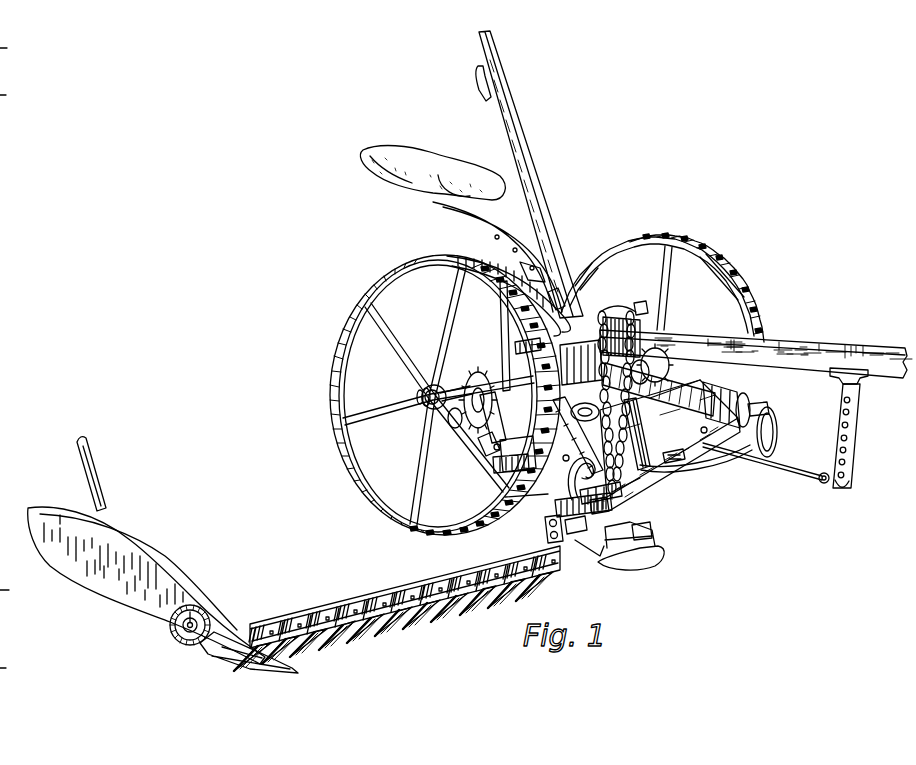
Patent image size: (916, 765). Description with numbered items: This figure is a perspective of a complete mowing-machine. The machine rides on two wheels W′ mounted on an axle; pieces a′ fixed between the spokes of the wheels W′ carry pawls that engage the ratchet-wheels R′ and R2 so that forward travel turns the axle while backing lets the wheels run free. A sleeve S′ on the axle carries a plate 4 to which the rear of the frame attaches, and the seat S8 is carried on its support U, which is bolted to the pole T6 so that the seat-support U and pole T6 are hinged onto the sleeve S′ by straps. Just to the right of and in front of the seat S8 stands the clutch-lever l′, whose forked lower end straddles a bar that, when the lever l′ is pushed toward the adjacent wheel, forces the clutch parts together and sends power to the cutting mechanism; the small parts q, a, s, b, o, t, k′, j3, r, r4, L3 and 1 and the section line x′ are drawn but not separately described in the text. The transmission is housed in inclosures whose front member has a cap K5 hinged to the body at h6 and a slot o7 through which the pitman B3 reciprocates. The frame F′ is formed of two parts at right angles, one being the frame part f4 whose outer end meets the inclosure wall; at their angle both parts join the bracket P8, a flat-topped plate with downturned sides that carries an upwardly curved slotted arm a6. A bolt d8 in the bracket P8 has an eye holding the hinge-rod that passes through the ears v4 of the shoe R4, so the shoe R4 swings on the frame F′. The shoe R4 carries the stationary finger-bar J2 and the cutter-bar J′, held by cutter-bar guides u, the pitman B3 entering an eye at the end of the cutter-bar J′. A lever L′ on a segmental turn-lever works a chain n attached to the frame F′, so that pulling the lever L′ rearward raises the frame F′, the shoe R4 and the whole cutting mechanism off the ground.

The wheels W′ is at (372, 298).
The lever L′ is at (533, 164).
The seat S8 is at (461, 229).
The clutch-lever l′ is at (463, 254).
The seat-support U is at (514, 270).
The lever pawl q is at (551, 297).
The pieces a′ is at (419, 391).
The ratchet-wheel R2 is at (438, 407).
The sleeve S′ is at (600, 363).
The spur gear a is at (495, 388).
The bracket arm s is at (500, 313).
The shifting lever b is at (523, 341).
The lifting bar L3 is at (496, 468).
The connecting link 1 is at (503, 499).
The plate 4 is at (487, 439).
The pivot pin o is at (492, 445).
The chain n is at (616, 393).
The section line x′ is at (643, 307).
The pole T6 is at (826, 338).
The cap K5 is at (778, 432).
The hinge h6 is at (764, 406).
The slot o7 is at (734, 463).
The crank shaft k′ is at (659, 389).
The ratchet-wheel R′ is at (674, 370).
The pivot bolt t is at (705, 424).
The frame part f4 is at (640, 448).
The pitman B3 is at (676, 490).
The bracket P8 is at (635, 491).
The arm a6 is at (578, 435).
The pivot pin j3 is at (561, 451).
The frame F′ is at (595, 481).
The pitman r is at (541, 537).
The pitman head r4 is at (550, 525).
The shoe R4 is at (662, 546).
The projecting ears v4 is at (628, 532).
The bolt d8 is at (600, 492).
The cutter-bar J′ is at (396, 628).
The finger-bar J2 is at (474, 606).
The cutter-bar guides u is at (342, 614).